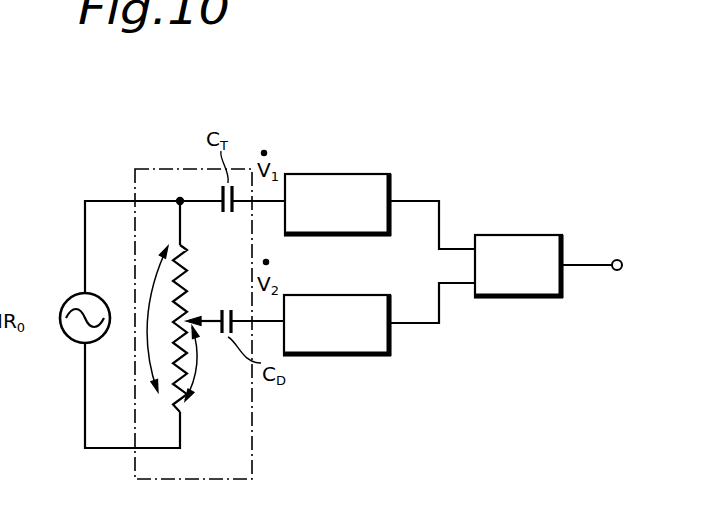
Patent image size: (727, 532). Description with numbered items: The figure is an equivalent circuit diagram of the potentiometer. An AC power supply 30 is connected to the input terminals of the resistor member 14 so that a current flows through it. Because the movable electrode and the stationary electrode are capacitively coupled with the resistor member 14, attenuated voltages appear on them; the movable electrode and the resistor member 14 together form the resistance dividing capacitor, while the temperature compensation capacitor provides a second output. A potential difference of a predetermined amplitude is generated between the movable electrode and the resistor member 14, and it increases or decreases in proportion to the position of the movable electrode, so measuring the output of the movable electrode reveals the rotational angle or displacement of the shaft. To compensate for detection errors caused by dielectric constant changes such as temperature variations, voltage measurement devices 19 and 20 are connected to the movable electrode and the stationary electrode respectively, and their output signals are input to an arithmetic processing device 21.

The resistor member 14 is at (180, 377).
The voltage measurement device 19 is at (337, 174).
The voltage measurement device 20 is at (360, 355).
The arithmetic processing device 21 is at (516, 235).
The AC power supply 30 is at (63, 337).